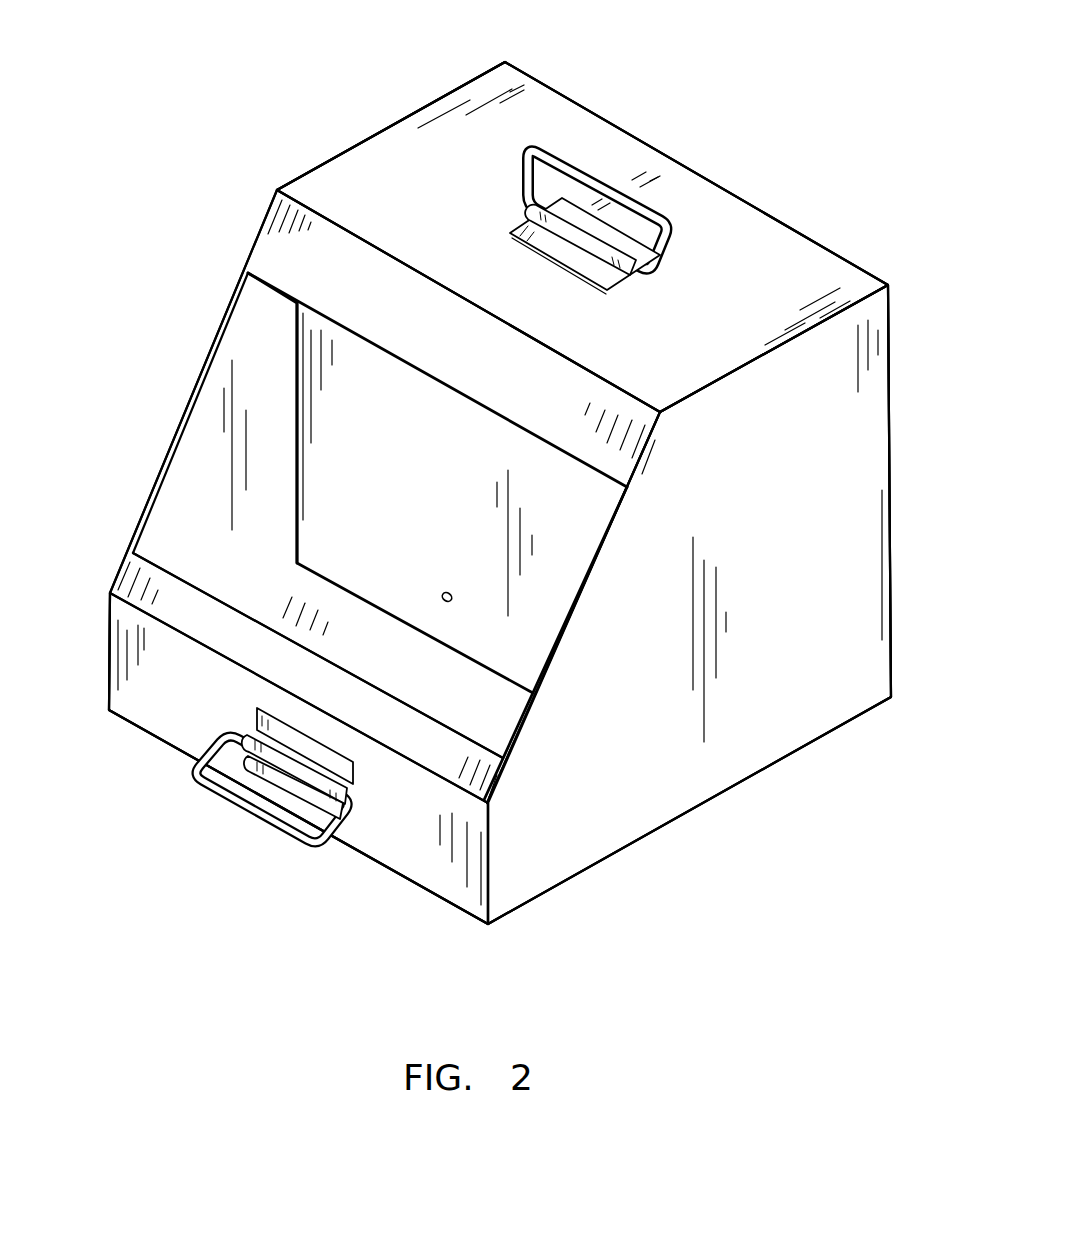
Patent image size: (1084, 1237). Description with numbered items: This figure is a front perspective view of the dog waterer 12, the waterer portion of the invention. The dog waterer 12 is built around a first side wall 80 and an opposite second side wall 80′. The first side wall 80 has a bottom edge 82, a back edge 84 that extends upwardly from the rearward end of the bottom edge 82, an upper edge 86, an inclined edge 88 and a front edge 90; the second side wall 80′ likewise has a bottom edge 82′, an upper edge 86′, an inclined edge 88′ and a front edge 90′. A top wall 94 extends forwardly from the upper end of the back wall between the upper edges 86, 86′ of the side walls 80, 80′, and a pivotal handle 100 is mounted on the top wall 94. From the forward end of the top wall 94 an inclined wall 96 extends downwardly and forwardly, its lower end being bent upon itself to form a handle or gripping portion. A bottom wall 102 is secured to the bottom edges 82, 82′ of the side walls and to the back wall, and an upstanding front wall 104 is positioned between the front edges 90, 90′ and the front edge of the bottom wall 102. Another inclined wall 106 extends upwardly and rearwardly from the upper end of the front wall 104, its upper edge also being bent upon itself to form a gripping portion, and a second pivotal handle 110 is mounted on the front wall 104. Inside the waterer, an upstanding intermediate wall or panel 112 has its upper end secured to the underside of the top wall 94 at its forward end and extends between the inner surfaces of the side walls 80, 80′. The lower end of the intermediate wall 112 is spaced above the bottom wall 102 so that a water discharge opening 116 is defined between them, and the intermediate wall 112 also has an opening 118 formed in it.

The dog waterer 12 is at (592, 81).
The first side wall 80 is at (830, 597).
The second side wall 80′ is at (213, 447).
The bottom edge 82 is at (731, 788).
The bottom edge 82′ is at (290, 610).
The back edge 84 is at (894, 505).
The upper edge 86 is at (783, 337).
The upper edge 86′ is at (337, 150).
The inclined edge 88 is at (570, 620).
The inclined edge 88′ is at (198, 365).
The front edge 90 is at (491, 853).
The front edge 90′ is at (107, 637).
The top wall 94 is at (460, 219).
The inclined wall 96 is at (502, 380).
The pivotal handle 100 is at (653, 203).
The bottom wall 102 is at (430, 699).
The front wall 104 is at (415, 824).
The inclined wall 106 is at (340, 709).
The pivotal handle 110 is at (317, 853).
The intermediate wall 112 is at (550, 551).
The water discharge opening 116 is at (313, 577).
The opening 118 is at (446, 590).